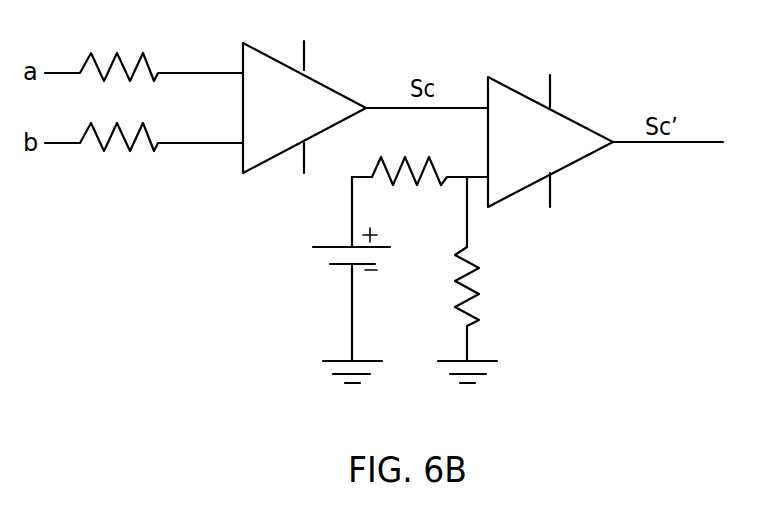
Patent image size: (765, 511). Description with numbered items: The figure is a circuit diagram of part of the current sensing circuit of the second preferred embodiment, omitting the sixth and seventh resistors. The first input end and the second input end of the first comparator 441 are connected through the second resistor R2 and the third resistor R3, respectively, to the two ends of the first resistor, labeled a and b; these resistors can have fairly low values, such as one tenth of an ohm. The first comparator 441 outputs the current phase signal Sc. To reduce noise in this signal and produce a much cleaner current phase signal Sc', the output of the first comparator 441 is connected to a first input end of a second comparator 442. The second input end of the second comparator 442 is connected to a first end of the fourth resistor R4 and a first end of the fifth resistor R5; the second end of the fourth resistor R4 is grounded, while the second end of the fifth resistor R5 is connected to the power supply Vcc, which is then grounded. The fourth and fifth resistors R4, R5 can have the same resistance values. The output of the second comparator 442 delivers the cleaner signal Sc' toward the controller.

The first comparator 441 is at (319, 101).
The second comparator 442 is at (567, 137).
The second resistor R2 is at (144, 50).
The third resistor R3 is at (144, 156).
The fourth resistor R4 is at (473, 280).
The fifth resistor R5 is at (420, 157).
The power supply Vcc is at (326, 280).